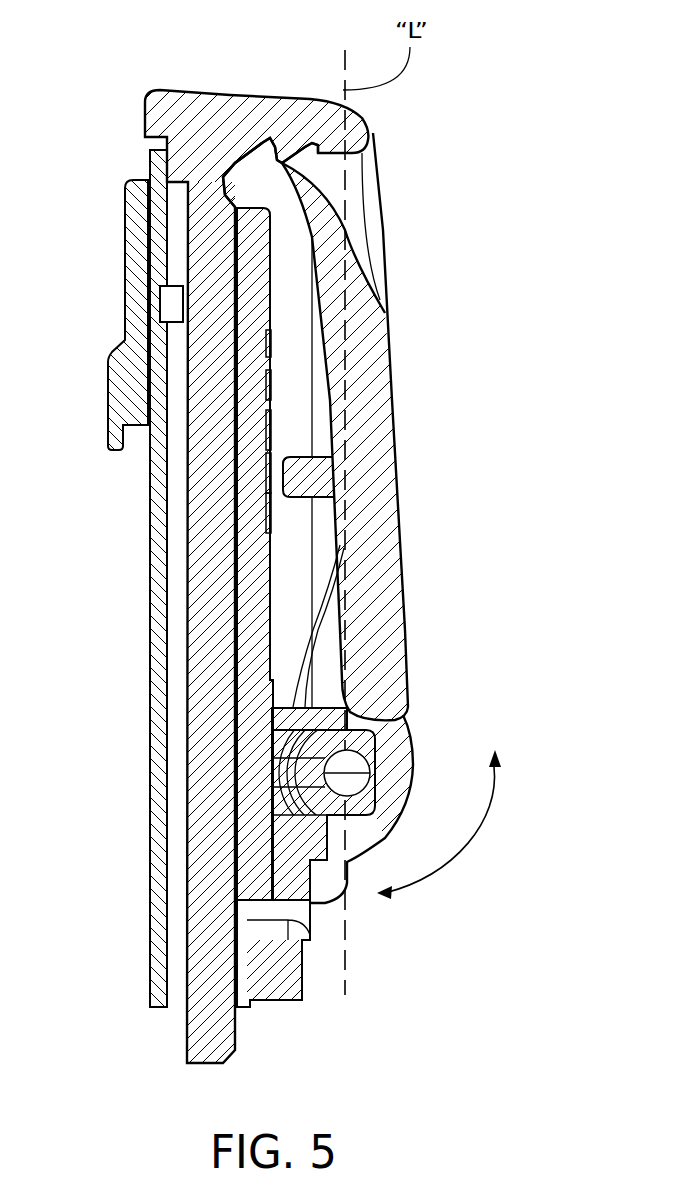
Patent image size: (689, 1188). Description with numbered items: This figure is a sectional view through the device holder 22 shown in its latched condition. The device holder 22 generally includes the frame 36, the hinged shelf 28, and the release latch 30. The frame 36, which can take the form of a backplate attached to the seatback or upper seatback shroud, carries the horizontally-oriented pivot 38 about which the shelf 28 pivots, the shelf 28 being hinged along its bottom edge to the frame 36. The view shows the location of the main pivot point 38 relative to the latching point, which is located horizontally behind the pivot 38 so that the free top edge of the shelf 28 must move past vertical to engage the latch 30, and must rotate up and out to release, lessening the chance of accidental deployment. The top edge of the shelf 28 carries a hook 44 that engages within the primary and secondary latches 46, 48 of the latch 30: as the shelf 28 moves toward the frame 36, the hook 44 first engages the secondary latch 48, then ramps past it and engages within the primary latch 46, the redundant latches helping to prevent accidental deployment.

The device holder 22 is at (440, 128).
The shelf 28 is at (397, 353).
The release latch 30 is at (205, 103).
The frame 36 is at (152, 612).
The pivot 38 is at (413, 748).
The hook 44 is at (232, 160).
The primary latch 46 is at (259, 152).
The secondary latch 48 is at (310, 147).